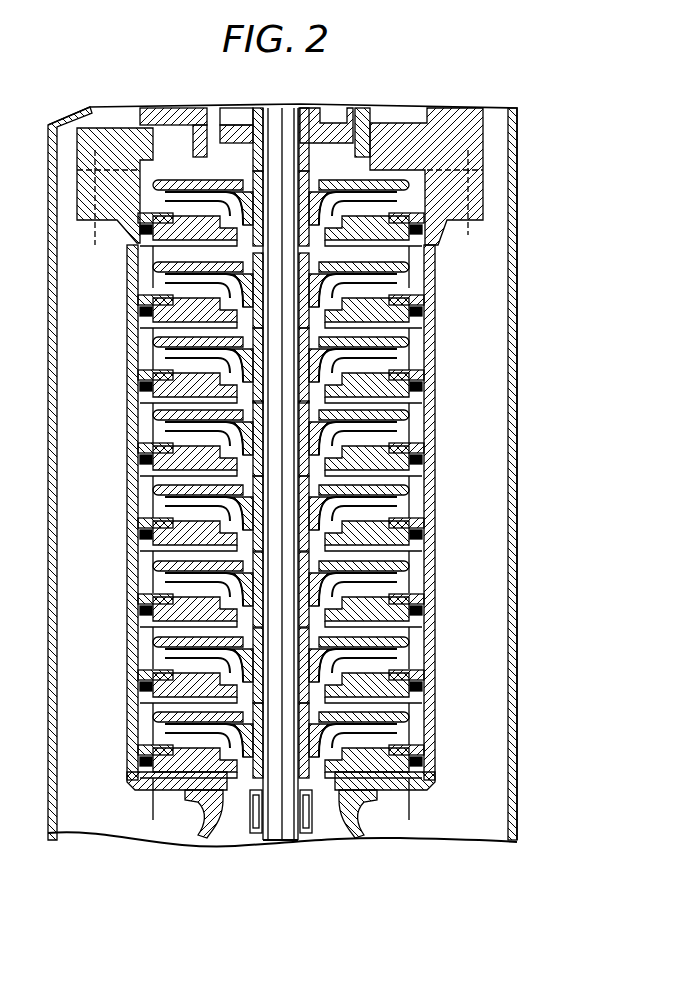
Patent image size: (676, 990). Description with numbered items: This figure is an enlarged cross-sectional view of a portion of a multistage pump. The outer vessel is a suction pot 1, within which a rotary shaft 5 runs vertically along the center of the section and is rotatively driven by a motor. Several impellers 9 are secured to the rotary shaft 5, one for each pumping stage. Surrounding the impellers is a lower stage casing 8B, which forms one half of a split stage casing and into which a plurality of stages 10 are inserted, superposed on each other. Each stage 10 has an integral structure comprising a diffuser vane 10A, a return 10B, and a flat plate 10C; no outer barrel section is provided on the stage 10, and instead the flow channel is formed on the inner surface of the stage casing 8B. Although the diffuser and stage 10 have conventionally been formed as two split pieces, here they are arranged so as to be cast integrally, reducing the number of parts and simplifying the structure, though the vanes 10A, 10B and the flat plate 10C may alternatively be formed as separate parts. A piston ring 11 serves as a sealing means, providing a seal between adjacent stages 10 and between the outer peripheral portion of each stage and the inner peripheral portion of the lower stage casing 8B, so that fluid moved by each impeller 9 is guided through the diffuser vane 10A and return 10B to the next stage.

The suction pot 1 is at (517, 268).
The rotary shaft 5 is at (280, 832).
The lower stage casing 8B is at (437, 334).
The impeller 9 is at (440, 502).
The stage 10 is at (365, 469).
The diffuser vane 10A is at (453, 507).
The return 10B is at (433, 485).
The flat plate 10C is at (436, 468).
The piston ring 11 is at (437, 455).